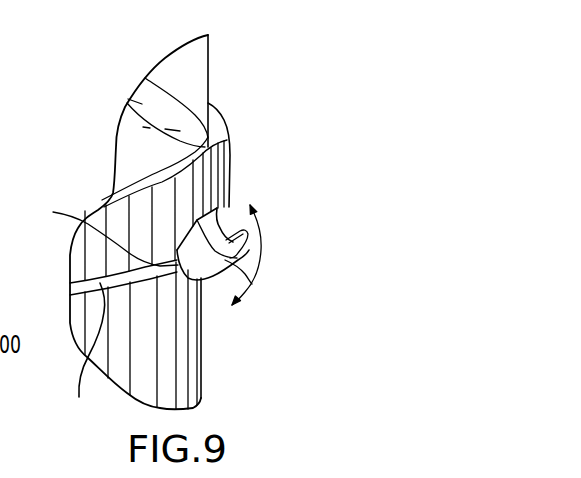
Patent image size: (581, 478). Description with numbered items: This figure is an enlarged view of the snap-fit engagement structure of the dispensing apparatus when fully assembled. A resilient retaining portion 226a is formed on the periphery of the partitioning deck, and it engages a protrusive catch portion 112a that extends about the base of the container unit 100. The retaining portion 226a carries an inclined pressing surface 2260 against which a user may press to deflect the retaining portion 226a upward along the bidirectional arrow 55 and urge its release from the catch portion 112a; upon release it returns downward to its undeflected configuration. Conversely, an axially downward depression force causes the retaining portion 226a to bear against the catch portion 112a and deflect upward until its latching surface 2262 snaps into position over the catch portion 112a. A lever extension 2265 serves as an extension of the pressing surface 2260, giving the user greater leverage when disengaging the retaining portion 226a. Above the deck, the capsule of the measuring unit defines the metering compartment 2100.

The container unit 100 is at (161, 237).
The metering compartment 2100 is at (203, 80).
The inclined pressing surface 2260 is at (203, 280).
The latching surface 2262 is at (90, 233).
The lever extension 2265 is at (216, 216).
The retaining portion 226a is at (251, 281).
The rotation direction arrow 55 is at (262, 242).
The catch portion 112a is at (82, 356).